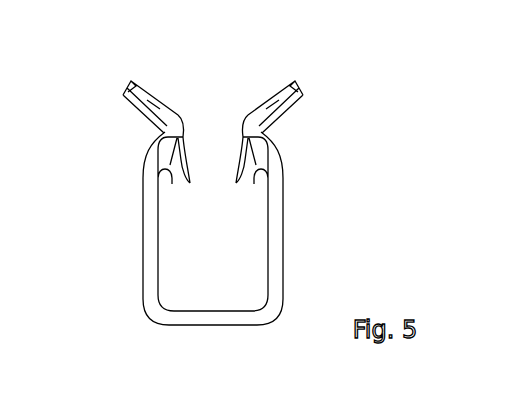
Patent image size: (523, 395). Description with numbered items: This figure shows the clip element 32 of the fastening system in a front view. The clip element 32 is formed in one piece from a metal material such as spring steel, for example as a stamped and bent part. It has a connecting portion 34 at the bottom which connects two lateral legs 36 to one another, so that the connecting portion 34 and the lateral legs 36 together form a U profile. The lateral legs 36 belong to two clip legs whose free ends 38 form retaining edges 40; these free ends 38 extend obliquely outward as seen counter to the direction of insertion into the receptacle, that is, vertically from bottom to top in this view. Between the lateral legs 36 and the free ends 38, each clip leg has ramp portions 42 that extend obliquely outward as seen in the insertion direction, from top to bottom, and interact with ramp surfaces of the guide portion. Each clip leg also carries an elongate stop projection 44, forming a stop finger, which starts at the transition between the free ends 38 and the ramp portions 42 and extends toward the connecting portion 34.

The clip element 32 is at (344, 124).
The connecting portion 34 is at (228, 312).
The lateral legs 36 is at (150, 242).
The free ends 38 is at (181, 128).
The retaining edges 40 is at (132, 86).
The ramp portions 42 is at (160, 181).
The stop projection 44 is at (187, 181).